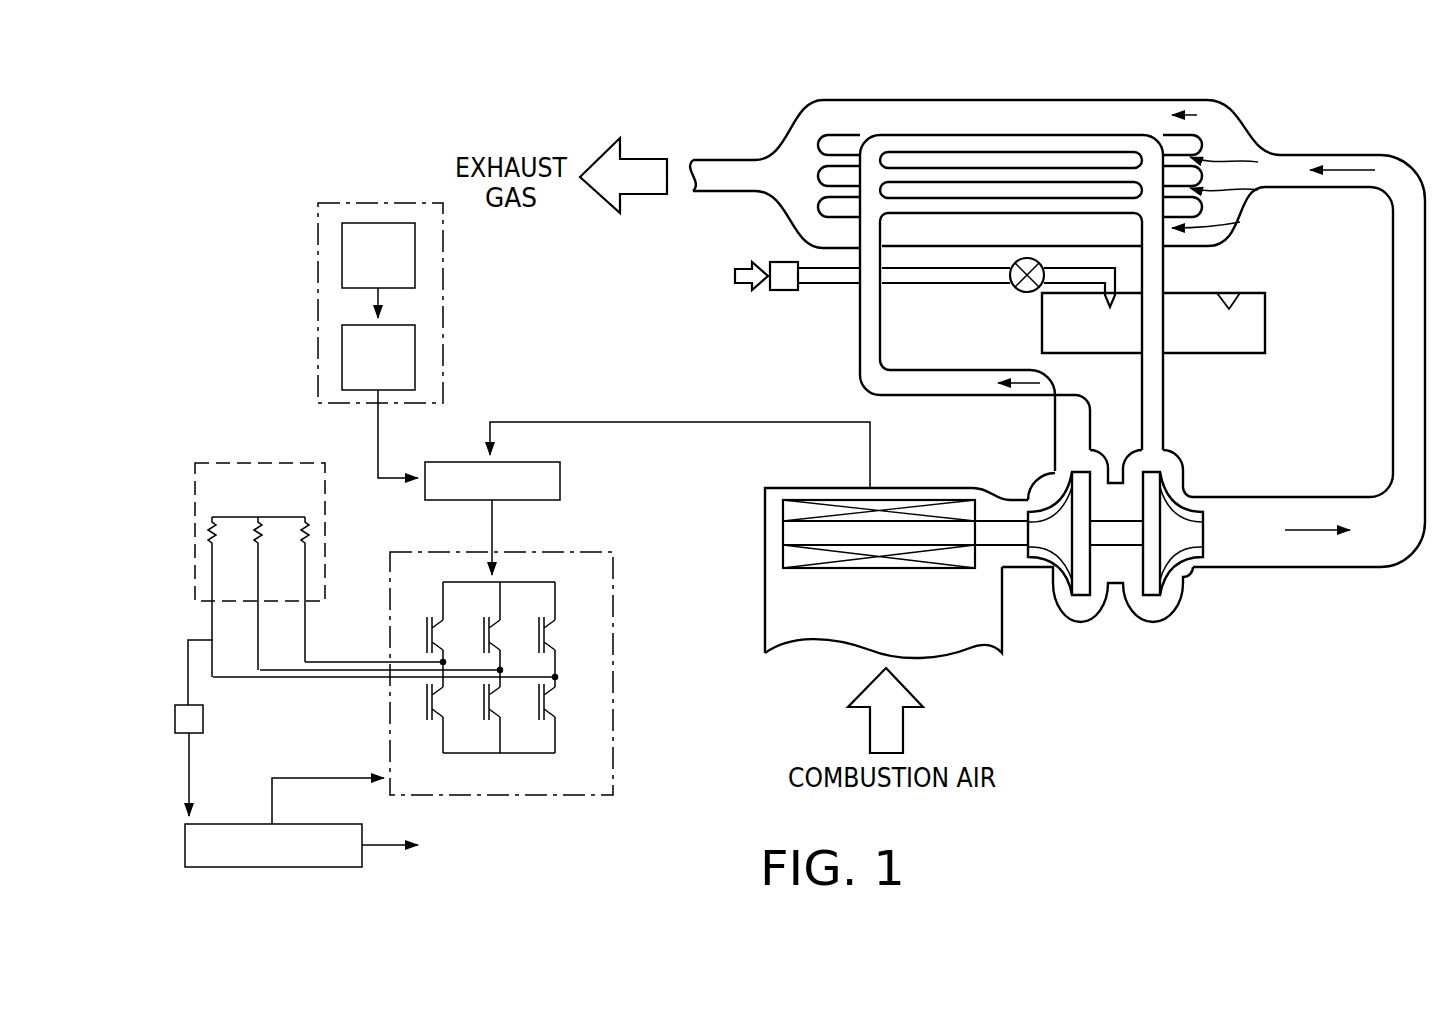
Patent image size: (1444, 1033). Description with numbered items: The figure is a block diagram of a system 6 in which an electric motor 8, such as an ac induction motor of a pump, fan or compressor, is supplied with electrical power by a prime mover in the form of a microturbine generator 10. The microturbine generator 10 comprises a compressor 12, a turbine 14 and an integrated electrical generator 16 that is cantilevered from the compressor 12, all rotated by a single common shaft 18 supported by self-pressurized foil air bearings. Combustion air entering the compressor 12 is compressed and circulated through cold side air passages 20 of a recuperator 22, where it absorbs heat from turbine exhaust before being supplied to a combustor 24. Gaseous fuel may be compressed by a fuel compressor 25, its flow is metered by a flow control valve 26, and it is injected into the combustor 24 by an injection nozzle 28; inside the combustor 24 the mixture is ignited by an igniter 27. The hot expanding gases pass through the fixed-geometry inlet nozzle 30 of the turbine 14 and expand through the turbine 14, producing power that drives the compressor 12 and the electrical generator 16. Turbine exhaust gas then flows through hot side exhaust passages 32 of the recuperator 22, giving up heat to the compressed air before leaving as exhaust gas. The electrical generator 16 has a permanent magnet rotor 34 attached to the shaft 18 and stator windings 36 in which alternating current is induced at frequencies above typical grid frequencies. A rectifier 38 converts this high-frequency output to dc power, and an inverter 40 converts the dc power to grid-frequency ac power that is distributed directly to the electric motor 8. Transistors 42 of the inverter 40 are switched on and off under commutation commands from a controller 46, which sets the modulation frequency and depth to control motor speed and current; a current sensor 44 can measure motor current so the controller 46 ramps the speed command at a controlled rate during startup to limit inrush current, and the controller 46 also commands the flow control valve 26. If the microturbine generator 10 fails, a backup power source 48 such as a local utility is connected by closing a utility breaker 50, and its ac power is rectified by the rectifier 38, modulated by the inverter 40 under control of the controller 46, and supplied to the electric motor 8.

The system 6 is at (268, 124).
The electric motor 8 is at (228, 462).
The microturbine generator 10 is at (1158, 668).
The compressor 12 is at (1075, 565).
The turbine 14 is at (1163, 562).
The electrical generator 16 is at (760, 502).
The shaft 18 is at (1102, 532).
The cold side air passages 20 is at (900, 143).
The recuperator 22 is at (1224, 100).
The combustor 24 is at (1215, 353).
The fuel compressor 25 is at (787, 290).
The flow control valve 26 is at (1022, 290).
The igniter 27 is at (1226, 303).
The injection nozzle 28 is at (1108, 303).
The inlet nozzle 30 is at (1153, 447).
The hot side exhaust passages 32 is at (803, 100).
The permanent magnet rotor 34 is at (808, 537).
The stator windings 36 is at (855, 570).
The rectifier 38 is at (460, 462).
The inverter 40 is at (616, 753).
The transistors 42 is at (546, 690).
The current sensor 44 is at (205, 720).
The controller 46 is at (300, 823).
The backup power source 48 is at (342, 272).
The utility breaker 50 is at (342, 362).